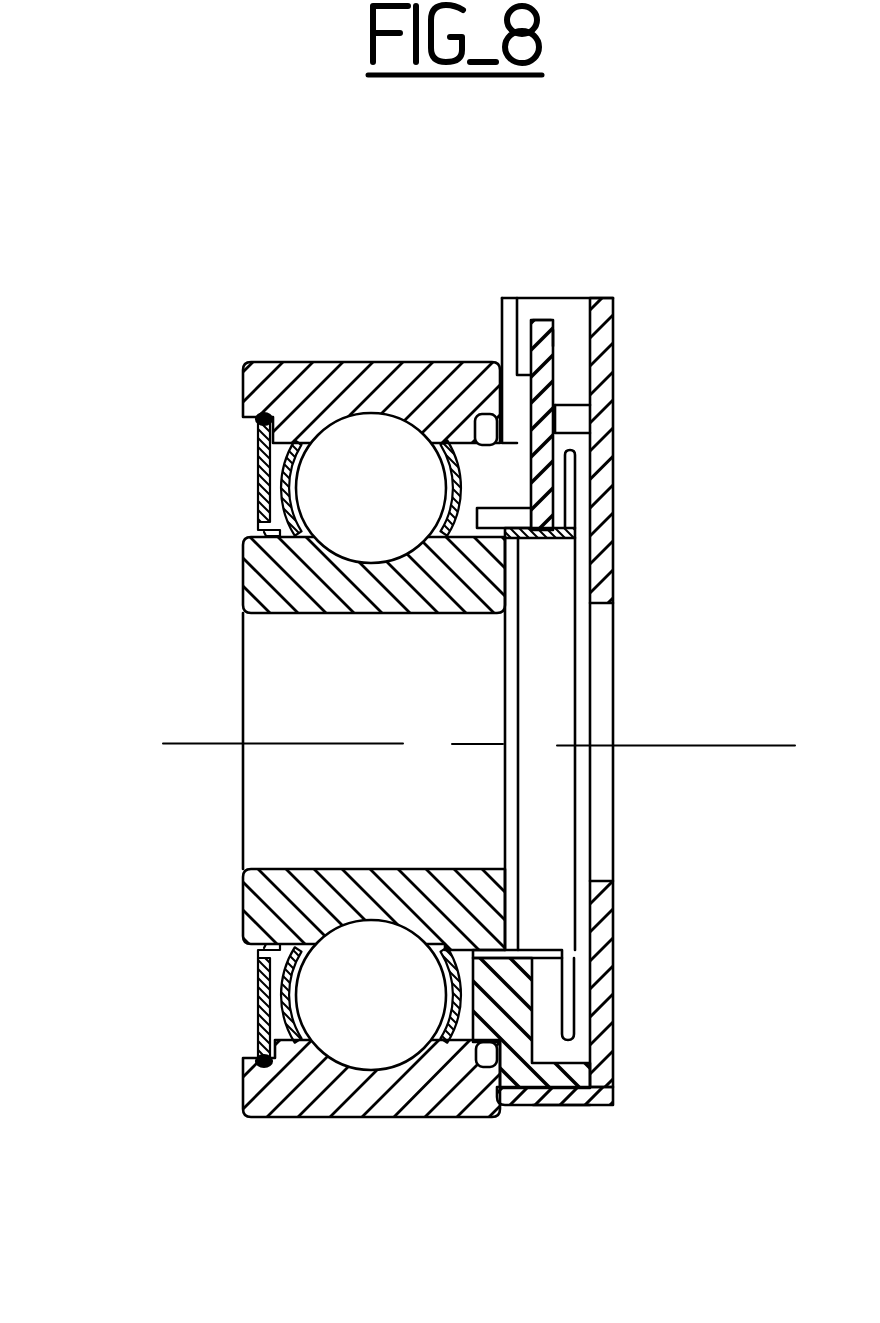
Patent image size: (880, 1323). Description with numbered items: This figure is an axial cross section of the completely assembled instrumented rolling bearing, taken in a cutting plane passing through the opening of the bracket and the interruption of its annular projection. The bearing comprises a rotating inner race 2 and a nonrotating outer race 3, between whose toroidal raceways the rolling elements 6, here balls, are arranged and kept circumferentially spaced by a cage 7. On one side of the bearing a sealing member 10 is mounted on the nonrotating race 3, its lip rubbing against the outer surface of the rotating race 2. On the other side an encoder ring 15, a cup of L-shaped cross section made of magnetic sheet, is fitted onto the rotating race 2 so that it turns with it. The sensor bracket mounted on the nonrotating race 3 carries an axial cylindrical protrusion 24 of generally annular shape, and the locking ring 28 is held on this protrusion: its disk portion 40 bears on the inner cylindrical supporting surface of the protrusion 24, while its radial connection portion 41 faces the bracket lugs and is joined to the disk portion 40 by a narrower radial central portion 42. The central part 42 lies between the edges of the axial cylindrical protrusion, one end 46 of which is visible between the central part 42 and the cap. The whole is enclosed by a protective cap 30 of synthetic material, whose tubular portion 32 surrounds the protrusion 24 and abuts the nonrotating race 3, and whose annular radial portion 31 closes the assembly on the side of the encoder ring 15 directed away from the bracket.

The rotating inner race 2 is at (275, 576).
The nonrotating outer race 3 is at (257, 387).
The rolling elements 6 is at (355, 433).
The cage 7 is at (305, 442).
The sealing member 10 is at (250, 470).
The encoder ring 15 is at (549, 553).
The axial cylindrical protrusion 24 is at (612, 1086).
The locking ring 28 is at (576, 339).
The protective cap 30 is at (628, 554).
The annular radial portion 31 is at (613, 922).
The tubular portion 32 is at (553, 1107).
The disk portion 40 is at (540, 486).
The radial connection portion 41 is at (545, 318).
The radial central portion 42 is at (556, 404).
The end of the axial cylindrical protrusion 46 is at (571, 421).